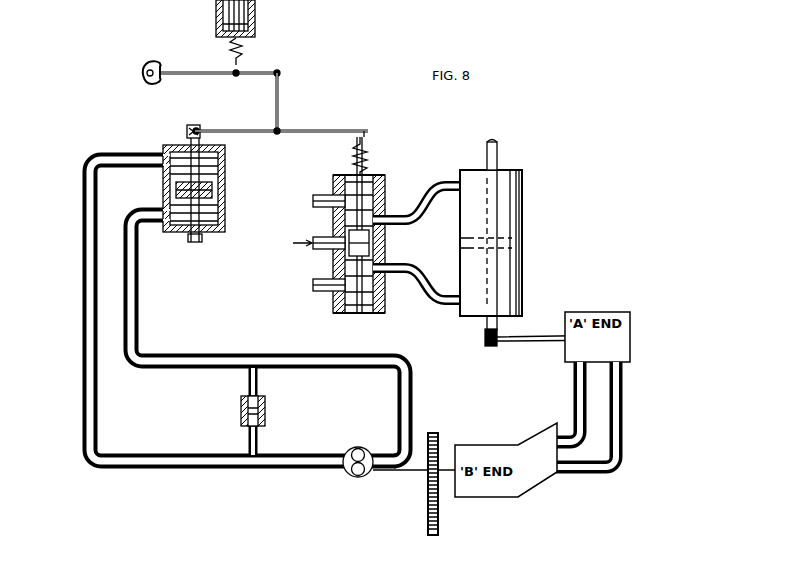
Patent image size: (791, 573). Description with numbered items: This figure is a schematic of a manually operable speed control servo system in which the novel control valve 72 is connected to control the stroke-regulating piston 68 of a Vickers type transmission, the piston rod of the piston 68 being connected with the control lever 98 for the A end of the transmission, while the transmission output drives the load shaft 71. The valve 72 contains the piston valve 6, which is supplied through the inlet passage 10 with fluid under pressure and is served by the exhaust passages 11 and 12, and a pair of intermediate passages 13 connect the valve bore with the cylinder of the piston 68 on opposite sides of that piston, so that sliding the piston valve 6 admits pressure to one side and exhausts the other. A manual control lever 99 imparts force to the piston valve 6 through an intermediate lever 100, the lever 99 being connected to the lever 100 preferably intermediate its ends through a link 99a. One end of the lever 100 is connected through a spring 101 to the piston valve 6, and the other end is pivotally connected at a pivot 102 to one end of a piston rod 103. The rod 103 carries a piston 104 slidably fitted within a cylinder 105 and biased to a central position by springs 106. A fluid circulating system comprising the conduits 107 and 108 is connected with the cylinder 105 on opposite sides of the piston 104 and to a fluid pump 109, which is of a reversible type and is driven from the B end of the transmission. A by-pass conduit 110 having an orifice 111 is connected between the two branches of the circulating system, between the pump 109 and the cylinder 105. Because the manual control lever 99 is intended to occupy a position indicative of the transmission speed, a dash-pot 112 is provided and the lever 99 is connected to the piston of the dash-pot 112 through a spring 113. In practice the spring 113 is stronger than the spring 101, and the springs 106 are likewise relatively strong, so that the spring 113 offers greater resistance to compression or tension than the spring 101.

The piston valve 6 is at (385, 243).
The inlet passage 10 is at (321, 249).
The exhaust passage 11 is at (325, 198).
The exhaust passage 12 is at (326, 290).
The intermediate passages 13 is at (392, 215).
The stroking piston 68 is at (510, 254).
The load shaft 71 is at (438, 517).
The control valve 72 is at (383, 183).
The control lever 98 is at (545, 340).
The manual control lever 99 is at (184, 70).
The link 99a is at (279, 98).
The intermediate lever 100 is at (315, 128).
The spring 101 is at (367, 152).
The pivot 102 is at (198, 128).
The piston rod 103 is at (187, 134).
The piston 104 is at (165, 183).
The cylinder 105 is at (222, 183).
The springs 106 is at (224, 153).
The conduit 107 is at (84, 307).
The conduit 108 is at (138, 307).
The fluid pump 109 is at (352, 476).
The by-pass conduit 110 is at (259, 385).
The orifice 111 is at (265, 413).
The dash-pot 112 is at (216, 12).
The spring 113 is at (243, 43).